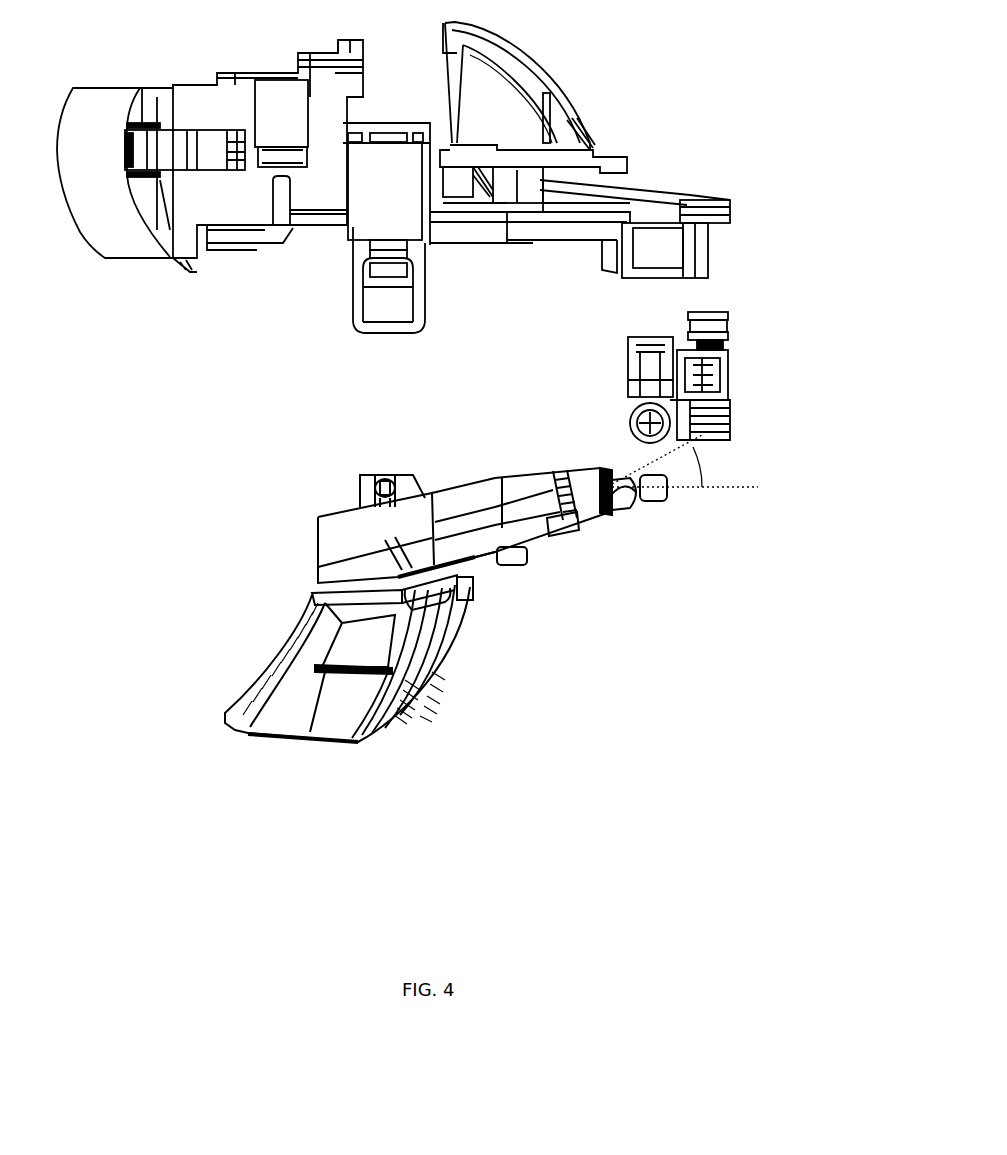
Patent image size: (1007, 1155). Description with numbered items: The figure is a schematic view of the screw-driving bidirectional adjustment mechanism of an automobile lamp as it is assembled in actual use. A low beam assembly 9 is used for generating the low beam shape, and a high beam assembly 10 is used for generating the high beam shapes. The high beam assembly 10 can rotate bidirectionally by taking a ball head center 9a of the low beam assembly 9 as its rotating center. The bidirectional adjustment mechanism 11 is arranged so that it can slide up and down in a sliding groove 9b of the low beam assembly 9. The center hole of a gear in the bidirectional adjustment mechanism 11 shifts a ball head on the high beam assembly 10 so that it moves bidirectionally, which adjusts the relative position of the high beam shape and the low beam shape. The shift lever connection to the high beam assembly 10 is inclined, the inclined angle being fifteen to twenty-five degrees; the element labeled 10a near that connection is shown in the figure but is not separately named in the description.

The low beam assembly 9 is at (449, 202).
The ball head center 9a is at (350, 278).
The sliding groove 9b is at (707, 254).
The high beam assembly 10 is at (505, 592).
The pivot pin of handle 10a is at (650, 505).
The bidirectional adjustment mechanism 11 is at (745, 404).